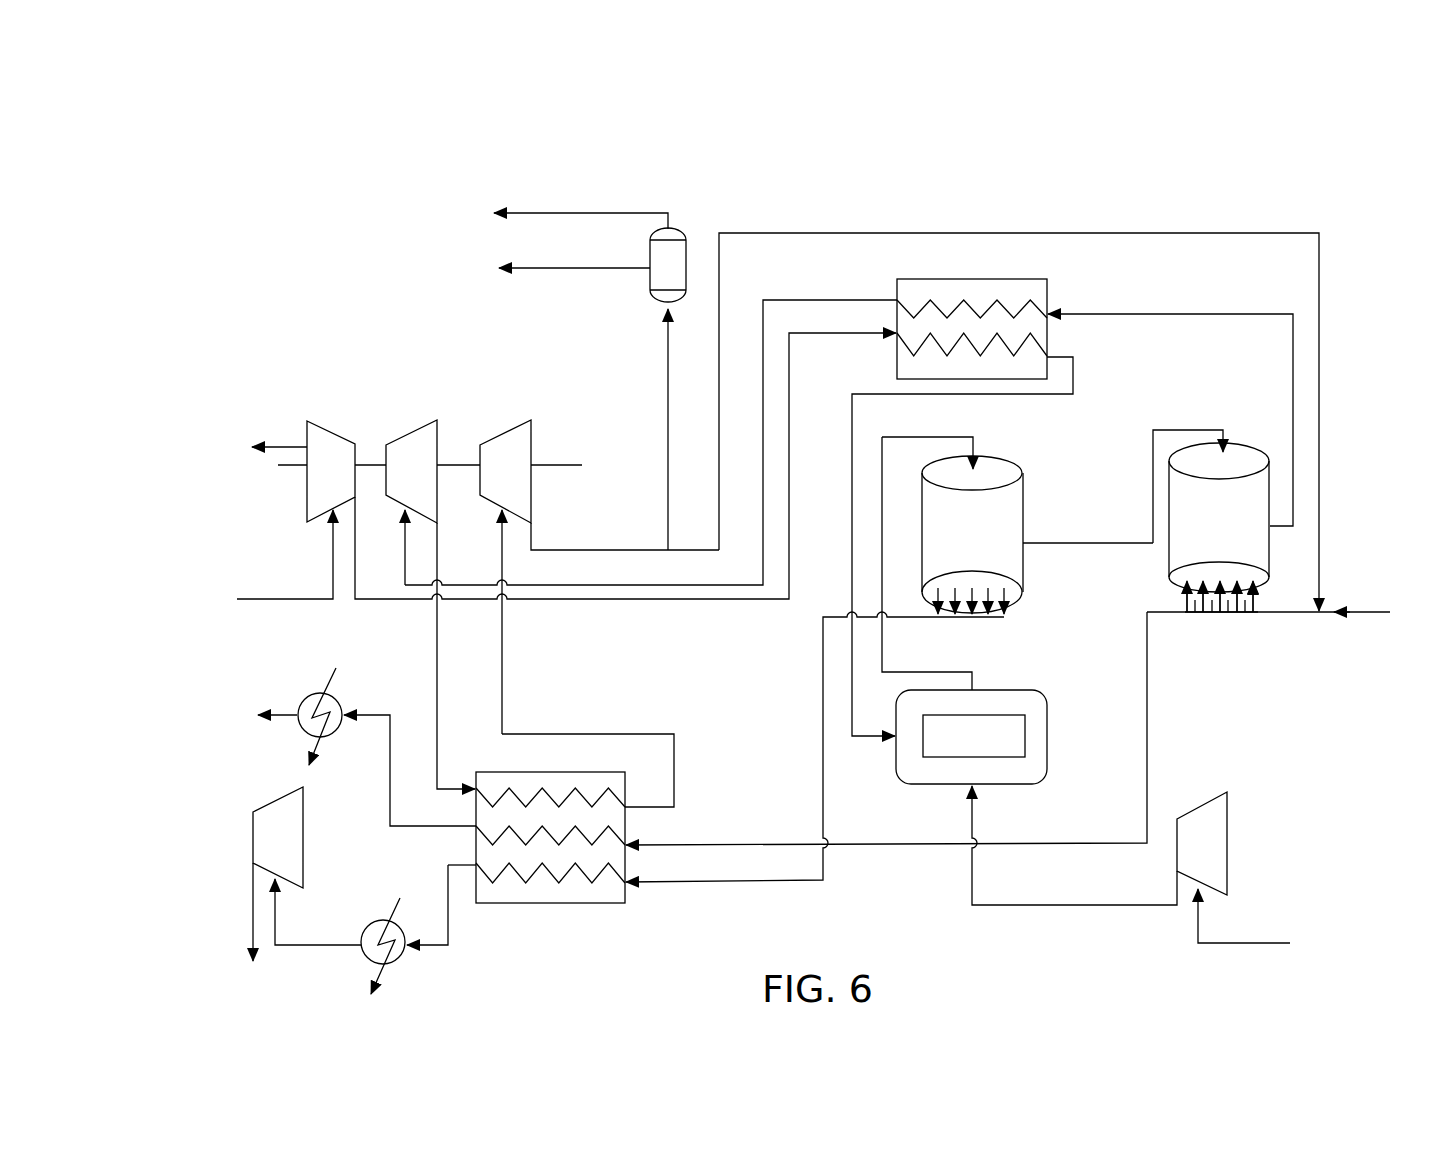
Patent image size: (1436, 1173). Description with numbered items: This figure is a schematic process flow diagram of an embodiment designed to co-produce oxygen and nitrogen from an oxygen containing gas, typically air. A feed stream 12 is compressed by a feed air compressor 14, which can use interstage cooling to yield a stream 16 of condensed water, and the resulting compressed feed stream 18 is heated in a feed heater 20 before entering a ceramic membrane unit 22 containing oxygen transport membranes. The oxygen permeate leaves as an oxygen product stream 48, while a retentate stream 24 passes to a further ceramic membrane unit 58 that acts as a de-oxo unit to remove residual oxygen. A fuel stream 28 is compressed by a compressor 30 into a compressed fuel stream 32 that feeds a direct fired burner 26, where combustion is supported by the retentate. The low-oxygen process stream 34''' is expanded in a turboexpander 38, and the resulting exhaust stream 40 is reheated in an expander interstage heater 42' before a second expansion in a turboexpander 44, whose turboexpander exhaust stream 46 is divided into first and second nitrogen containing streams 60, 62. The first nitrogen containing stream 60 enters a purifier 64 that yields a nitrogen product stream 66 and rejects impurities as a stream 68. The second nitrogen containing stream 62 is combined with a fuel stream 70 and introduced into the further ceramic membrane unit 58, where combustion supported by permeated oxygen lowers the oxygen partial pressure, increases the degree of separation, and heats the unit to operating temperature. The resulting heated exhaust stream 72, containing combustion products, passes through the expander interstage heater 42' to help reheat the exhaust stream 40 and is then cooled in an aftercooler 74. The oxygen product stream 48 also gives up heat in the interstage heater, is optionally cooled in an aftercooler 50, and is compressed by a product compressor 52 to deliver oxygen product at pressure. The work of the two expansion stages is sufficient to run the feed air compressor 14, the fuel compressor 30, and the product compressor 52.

The feed stream 12 is at (285, 598).
The feed air compressor 14 is at (317, 495).
The stream composed of condensed water 16 is at (282, 447).
The compressed feed stream 18 is at (585, 599).
The feed heater 20 is at (1040, 297).
The ceramic membrane unit 22 is at (1027, 477).
The retentate stream 24 is at (1089, 543).
The direct fired burner 26 is at (1047, 718).
The fuel stream 28 is at (1276, 943).
The compressor 30 is at (1208, 826).
The compressed fuel stream 32 is at (965, 900).
The process stream 34''' is at (1170, 389).
The turboexpander 38 is at (405, 452).
The exhaust stream 40 is at (436, 634).
The expander interstage heater 42' is at (572, 861).
The turboexpander 44 is at (505, 452).
The turboexpander exhaust stream 46 is at (597, 549).
The oxygen product stream 48 is at (822, 728).
The aftercooler 50 is at (393, 958).
The product compressor 52 is at (278, 815).
The further ceramic membrane unit 58 is at (1254, 441).
The first nitrogen containing stream 60 is at (667, 493).
The second nitrogen containing stream 62 is at (719, 478).
The purifier 64 is at (682, 260).
The nitrogen product stream 66 is at (597, 212).
The stream 68 is at (590, 270).
The fuel stream 70 is at (1380, 615).
The heated exhaust stream 72 is at (1147, 718).
The aftercooler 74 is at (313, 692).